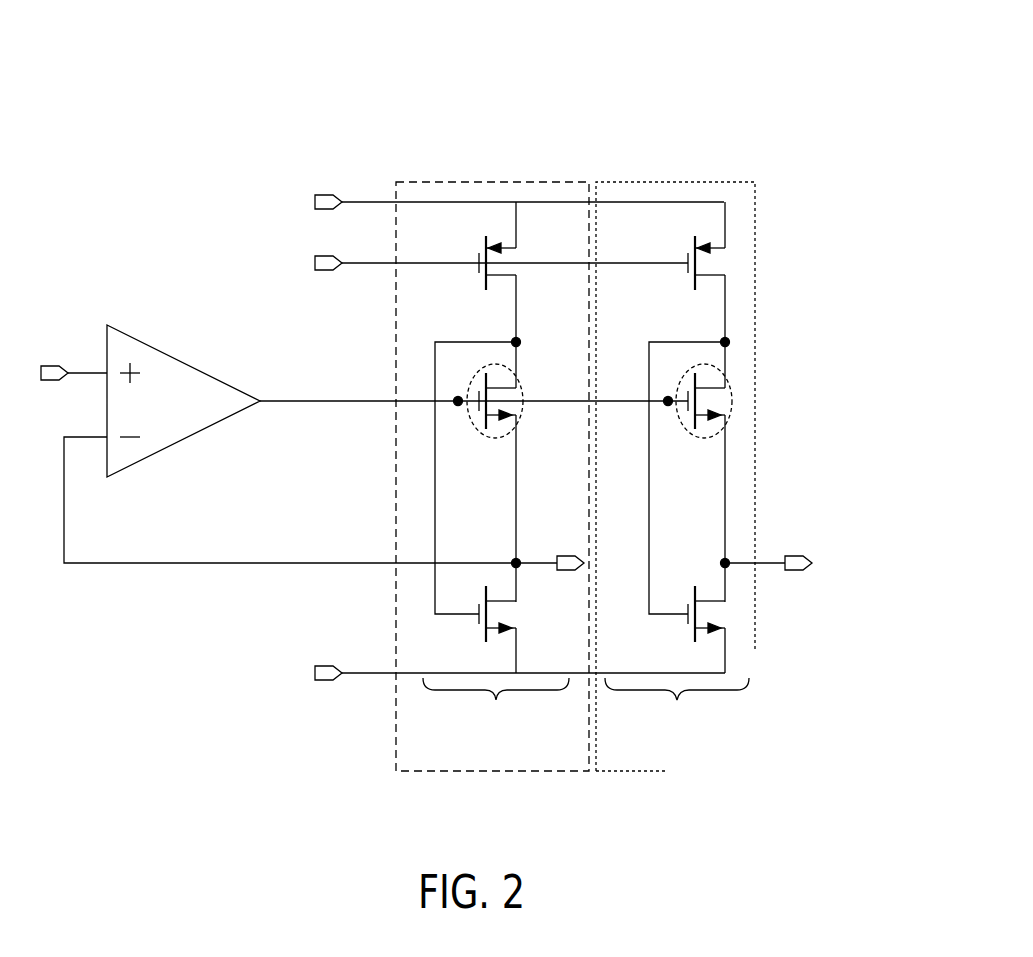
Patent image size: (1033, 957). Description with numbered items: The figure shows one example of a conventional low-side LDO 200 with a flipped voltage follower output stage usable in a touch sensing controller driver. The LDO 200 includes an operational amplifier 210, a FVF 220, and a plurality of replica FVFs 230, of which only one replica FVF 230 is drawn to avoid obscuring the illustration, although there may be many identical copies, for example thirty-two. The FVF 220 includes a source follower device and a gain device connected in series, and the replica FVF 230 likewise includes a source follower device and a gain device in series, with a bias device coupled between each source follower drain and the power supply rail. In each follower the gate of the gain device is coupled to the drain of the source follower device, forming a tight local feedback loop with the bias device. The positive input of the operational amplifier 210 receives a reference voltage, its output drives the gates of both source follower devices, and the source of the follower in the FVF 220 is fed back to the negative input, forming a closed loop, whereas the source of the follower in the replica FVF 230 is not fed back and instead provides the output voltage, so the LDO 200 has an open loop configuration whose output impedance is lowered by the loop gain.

The LDO 200 is at (676, 90).
The operational amplifier 210 is at (178, 358).
The FVF 220 is at (432, 182).
The replica FVF 230 is at (632, 182).